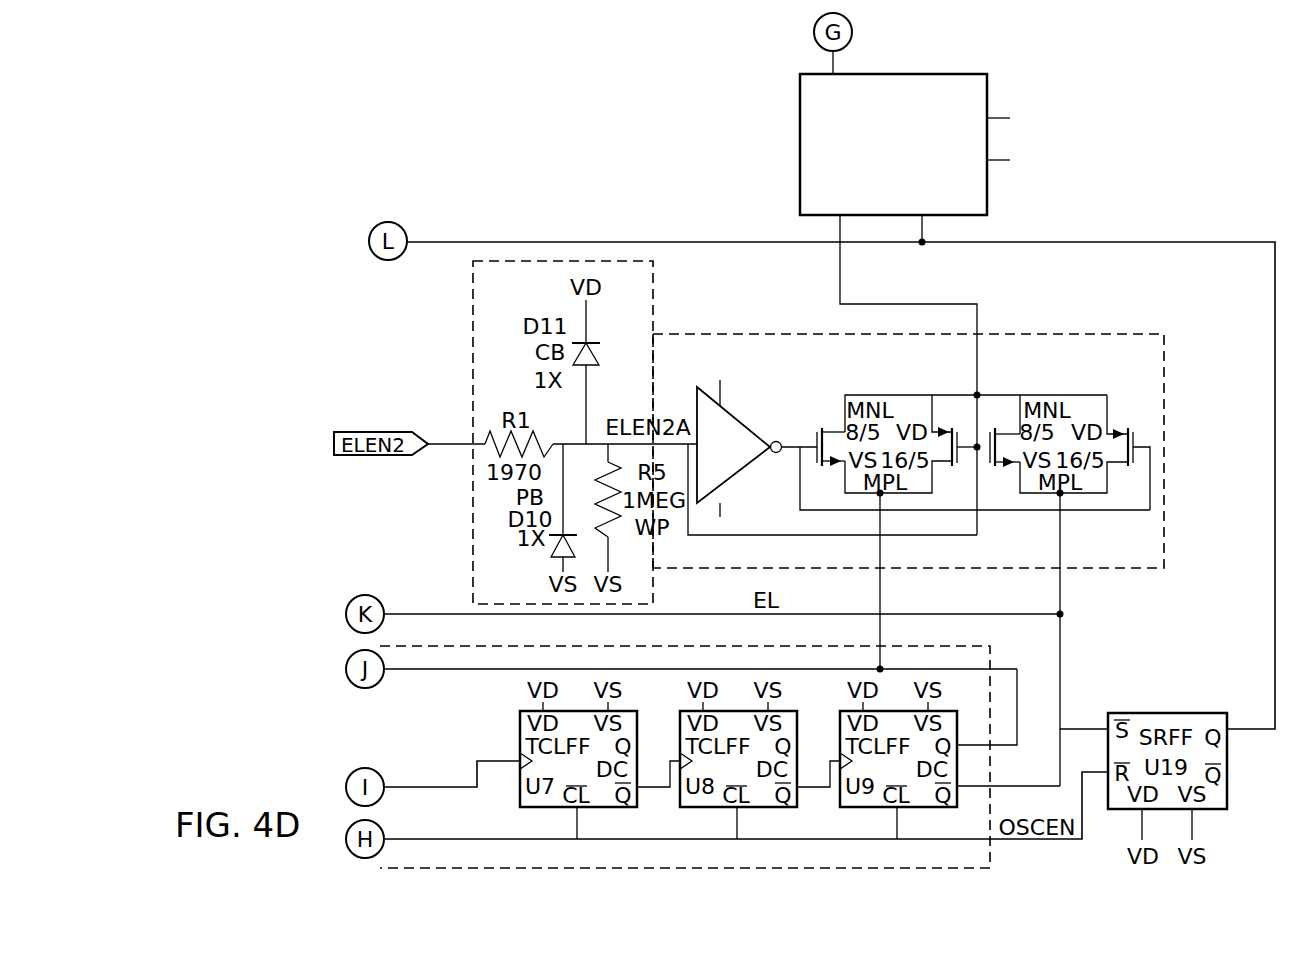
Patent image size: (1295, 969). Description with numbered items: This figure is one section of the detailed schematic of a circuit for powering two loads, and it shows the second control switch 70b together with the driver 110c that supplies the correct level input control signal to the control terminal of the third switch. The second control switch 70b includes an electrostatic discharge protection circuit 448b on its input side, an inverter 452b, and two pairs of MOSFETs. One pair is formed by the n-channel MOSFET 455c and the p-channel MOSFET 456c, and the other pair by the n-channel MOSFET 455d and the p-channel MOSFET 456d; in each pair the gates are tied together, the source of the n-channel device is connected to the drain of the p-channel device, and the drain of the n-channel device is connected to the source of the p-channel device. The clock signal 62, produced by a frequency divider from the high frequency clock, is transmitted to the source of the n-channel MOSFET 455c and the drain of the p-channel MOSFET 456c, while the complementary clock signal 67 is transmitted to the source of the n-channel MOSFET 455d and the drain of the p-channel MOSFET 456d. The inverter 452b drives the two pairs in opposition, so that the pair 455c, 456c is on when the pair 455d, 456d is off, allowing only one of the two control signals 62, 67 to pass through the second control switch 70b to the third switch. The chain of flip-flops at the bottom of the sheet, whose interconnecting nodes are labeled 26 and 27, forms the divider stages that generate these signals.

The driver 110c is at (915, 73).
The second control switch 70b is at (1083, 335).
The electrostatic discharge protection circuit 448b is at (655, 580).
The inverter 452b is at (733, 411).
The n-channel MOSFET 455c is at (814, 442).
The p-channel MOSFET 456c is at (952, 463).
The n-channel MOSFET 455d is at (987, 445).
The p-channel MOSFET 456d is at (1137, 425).
The clock signal 62 is at (1018, 680).
The complementary clock signal 67 is at (1062, 679).
The flip-flop interconnect node 26 is at (658, 776).
The flip-flop interconnect node 27 is at (818, 776).